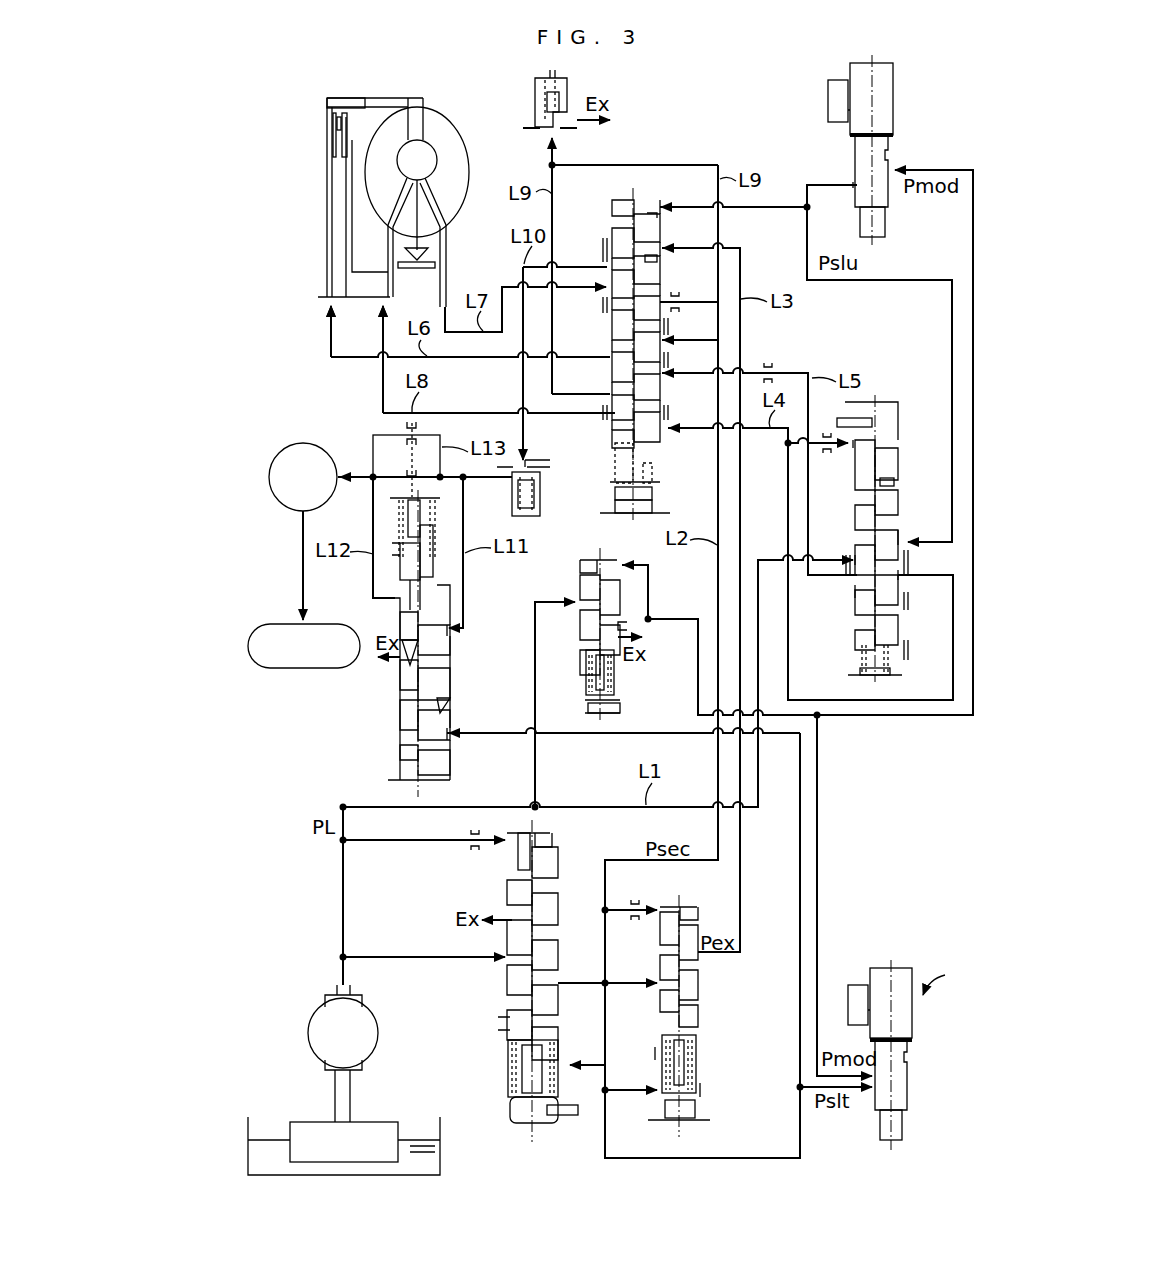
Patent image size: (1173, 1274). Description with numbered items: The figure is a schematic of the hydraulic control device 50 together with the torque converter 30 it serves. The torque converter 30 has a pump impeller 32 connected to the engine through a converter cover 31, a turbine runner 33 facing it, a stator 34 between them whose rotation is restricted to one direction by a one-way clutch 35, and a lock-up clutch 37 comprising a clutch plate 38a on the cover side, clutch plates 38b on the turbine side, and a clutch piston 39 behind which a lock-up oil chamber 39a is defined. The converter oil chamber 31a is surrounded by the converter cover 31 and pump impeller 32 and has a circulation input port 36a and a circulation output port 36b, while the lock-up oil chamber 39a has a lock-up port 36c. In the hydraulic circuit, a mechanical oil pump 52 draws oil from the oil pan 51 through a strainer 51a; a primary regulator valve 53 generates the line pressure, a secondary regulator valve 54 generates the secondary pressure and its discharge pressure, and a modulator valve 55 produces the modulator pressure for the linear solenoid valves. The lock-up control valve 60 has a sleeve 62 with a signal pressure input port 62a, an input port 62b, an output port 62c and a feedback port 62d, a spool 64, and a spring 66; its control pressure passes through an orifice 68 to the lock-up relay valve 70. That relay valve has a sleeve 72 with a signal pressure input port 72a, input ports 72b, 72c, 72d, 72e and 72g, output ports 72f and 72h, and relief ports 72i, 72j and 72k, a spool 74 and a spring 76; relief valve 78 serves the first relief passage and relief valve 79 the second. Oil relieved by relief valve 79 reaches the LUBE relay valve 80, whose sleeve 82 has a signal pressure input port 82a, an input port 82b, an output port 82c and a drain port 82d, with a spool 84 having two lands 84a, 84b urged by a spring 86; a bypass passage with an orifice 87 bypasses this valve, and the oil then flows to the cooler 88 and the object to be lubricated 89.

The torque converter 30 is at (444, 102).
The converter cover 31 is at (408, 97).
The converter oil chamber 31a is at (378, 111).
The pump impeller 32 is at (447, 128).
The turbine runner 33 is at (396, 107).
The stator 34 is at (417, 195).
The one-way clutch 35 is at (438, 254).
The circulation input port 36a is at (326, 306).
The circulation output port 36b is at (448, 291).
The lock-up port 36c is at (380, 314).
The lock-up clutch 37 is at (333, 185).
The clutch plate 38a is at (332, 100).
The clutch plates 38b is at (333, 131).
The clutch piston 39 is at (346, 193).
The lock-up oil chamber 39a is at (373, 275).
The hydraulic control device 50 is at (922, 86).
The oil pan 51 is at (326, 1126).
The strainer 51a is at (297, 1120).
The mechanical oil pump 52 is at (320, 1016).
The primary regulator valve 53 is at (562, 863).
The secondary regulator valve 54 is at (714, 1007).
The modulator valve 55 is at (654, 598).
The lock-up control valve 60 is at (897, 534).
The sleeve 62 is at (900, 443).
The signal pressure input port 62a is at (908, 540).
The input port 62b is at (854, 560).
The output port 62c is at (906, 571).
The feedback port 62d is at (853, 448).
The spool 64 is at (898, 500).
The spring 66 is at (860, 663).
The orifice 68 is at (775, 370).
The lock-up relay valve 70 is at (635, 347).
The sleeve 72 is at (660, 218).
The signal pressure input port 72a is at (661, 205).
The input port 72b is at (665, 435).
The input port 72c is at (663, 373).
The input port 72d is at (662, 340).
The input port 72e is at (662, 257).
The output port 72f is at (608, 357).
The input port 72g is at (608, 305).
The output port 72h is at (606, 424).
The relief port 72i is at (662, 305).
The relief port 72j is at (608, 394).
The relief port 72k is at (608, 267).
The spool 74 is at (660, 260).
The spring 76 is at (612, 455).
The relief valve 78 is at (572, 90).
The relief valve 79 is at (541, 512).
The LUBE relay valve 80 is at (374, 643).
The sleeve 82 is at (400, 735).
The signal pressure input port 82a is at (450, 740).
The input port 82b is at (450, 633).
The output port 82c is at (393, 612).
The drain port 82d is at (400, 670).
The spool 84 is at (450, 713).
The land 84a is at (440, 704).
The land 84b is at (431, 583).
The spring 86 is at (395, 530).
The orifice 87 is at (420, 428).
The cooler 88 is at (303, 443).
The object to be lubricated 89 is at (303, 672).